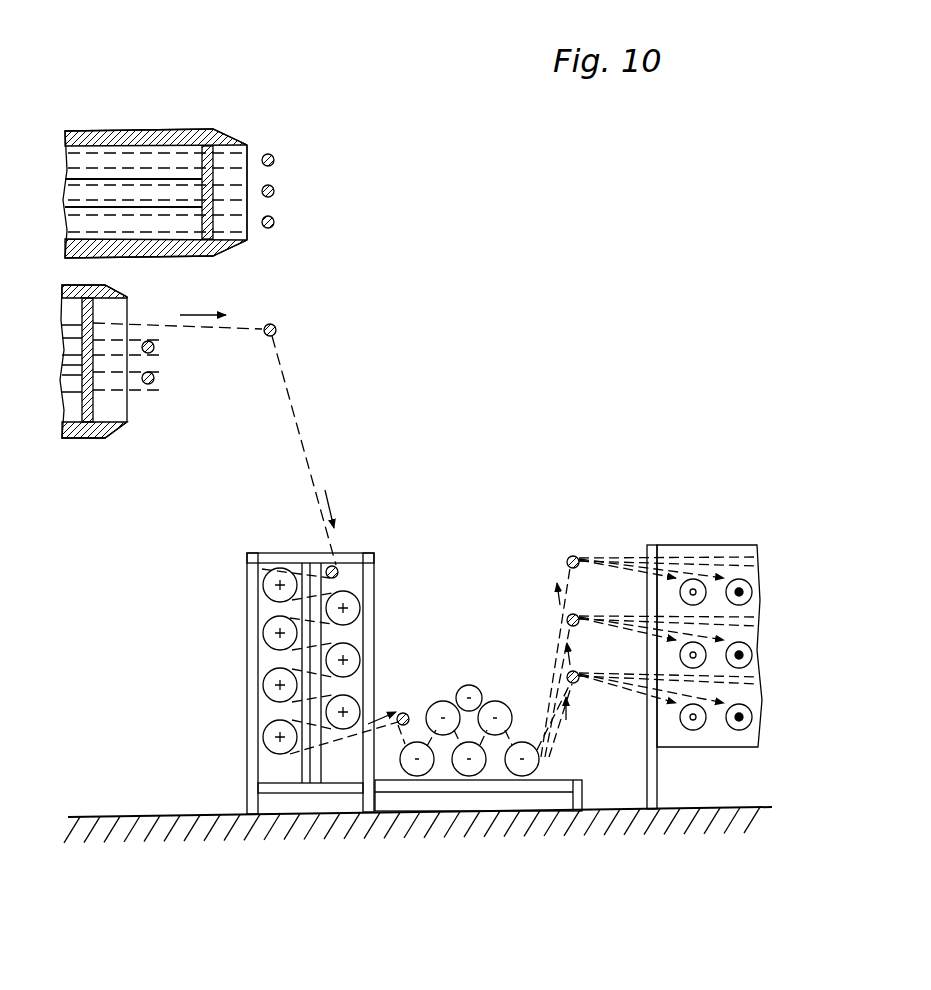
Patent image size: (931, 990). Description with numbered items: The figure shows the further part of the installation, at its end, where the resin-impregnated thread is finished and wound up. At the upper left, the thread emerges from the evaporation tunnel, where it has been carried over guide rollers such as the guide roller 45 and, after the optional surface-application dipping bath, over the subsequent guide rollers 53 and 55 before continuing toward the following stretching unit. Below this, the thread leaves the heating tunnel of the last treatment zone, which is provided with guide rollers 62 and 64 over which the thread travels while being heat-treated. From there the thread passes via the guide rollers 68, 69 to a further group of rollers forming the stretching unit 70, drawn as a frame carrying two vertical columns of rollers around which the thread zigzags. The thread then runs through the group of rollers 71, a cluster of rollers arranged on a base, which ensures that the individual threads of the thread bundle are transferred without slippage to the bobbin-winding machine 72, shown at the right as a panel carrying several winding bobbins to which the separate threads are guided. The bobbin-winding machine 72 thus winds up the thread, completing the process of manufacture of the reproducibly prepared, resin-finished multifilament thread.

The guide roller 45 is at (274, 158).
The guide roller 53 is at (274, 191).
The guide roller 55 is at (274, 224).
The guide roller 62 is at (154, 380).
The guide roller 64 is at (154, 349).
The guide roller 68 is at (276, 328).
The guide roller 69 is at (337, 570).
The stretching unit 70 is at (318, 797).
The group of rollers 71 is at (500, 783).
The bobbin-winding machine 72 is at (752, 775).